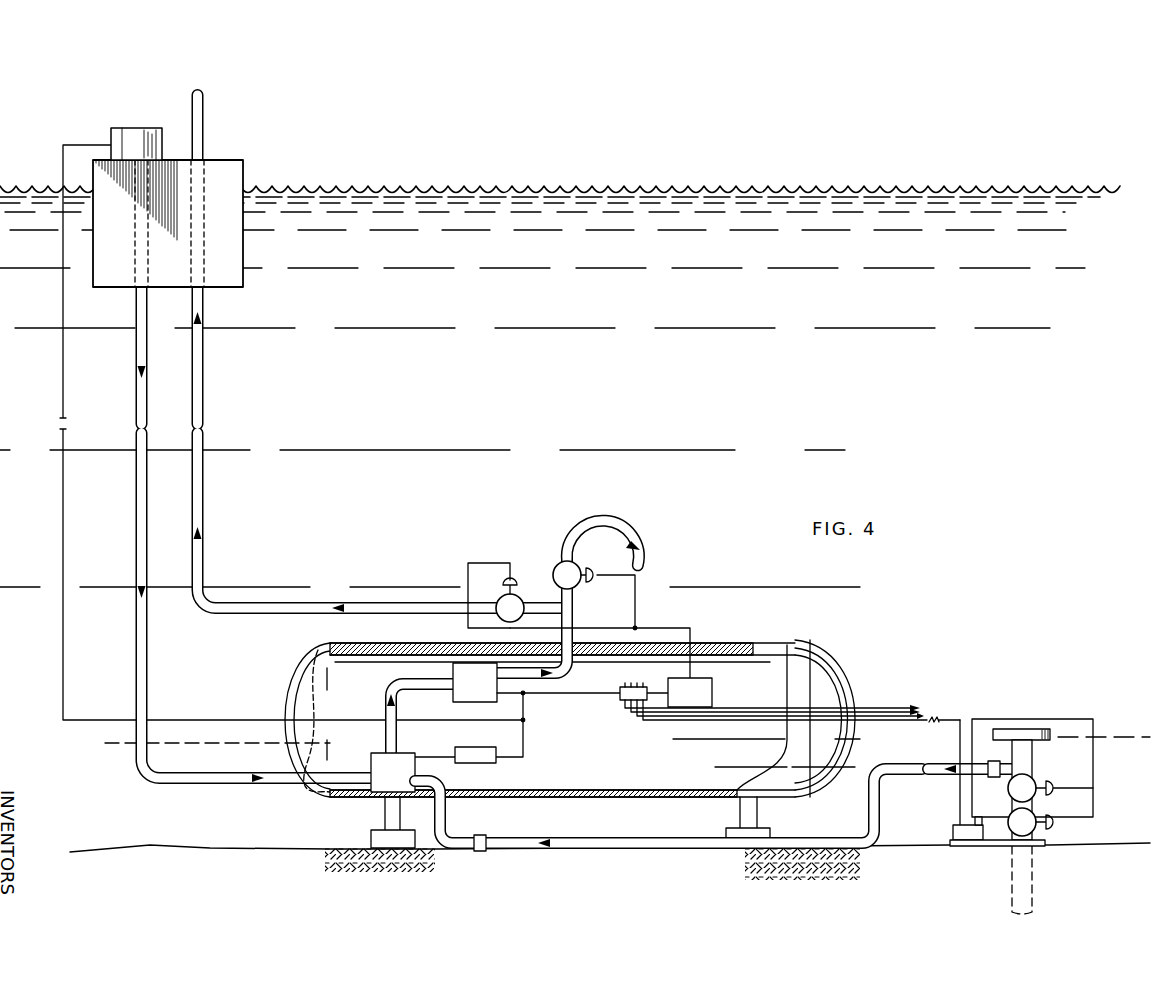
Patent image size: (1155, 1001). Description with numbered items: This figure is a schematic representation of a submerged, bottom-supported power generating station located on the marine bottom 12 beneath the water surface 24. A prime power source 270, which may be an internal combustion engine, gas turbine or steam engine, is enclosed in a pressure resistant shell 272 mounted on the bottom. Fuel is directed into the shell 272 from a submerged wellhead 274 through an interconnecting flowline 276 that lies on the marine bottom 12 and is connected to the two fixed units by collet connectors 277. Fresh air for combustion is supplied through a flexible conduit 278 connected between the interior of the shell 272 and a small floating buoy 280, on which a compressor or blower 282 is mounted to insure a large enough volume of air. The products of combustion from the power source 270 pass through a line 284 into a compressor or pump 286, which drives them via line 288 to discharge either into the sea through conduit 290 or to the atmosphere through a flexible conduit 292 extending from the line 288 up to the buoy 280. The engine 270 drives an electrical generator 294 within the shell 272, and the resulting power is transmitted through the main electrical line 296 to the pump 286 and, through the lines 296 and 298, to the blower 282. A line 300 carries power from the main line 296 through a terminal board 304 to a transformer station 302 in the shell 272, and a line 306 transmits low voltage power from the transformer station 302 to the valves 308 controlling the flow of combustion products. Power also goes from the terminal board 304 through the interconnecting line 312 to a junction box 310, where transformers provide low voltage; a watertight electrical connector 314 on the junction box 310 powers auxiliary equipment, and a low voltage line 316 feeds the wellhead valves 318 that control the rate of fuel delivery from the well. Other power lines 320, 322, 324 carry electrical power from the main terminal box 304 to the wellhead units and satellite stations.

The marine bottom 12 is at (212, 848).
The water surface 24 is at (627, 193).
The prime power source 270 is at (378, 753).
The pressure resistant shell 272 is at (832, 662).
The submerged wellhead 274 is at (1033, 758).
The interconnecting flowline 276 is at (615, 838).
The collet connectors 277 is at (483, 836).
The flexible conduit 278 is at (135, 497).
The floating buoy 280 is at (190, 272).
The compressor or blower 282 is at (124, 128).
The line 284 is at (385, 700).
The compressor or pump 286 is at (455, 702).
The line 288 is at (568, 668).
The conduit 290 is at (636, 524).
The flexible conduit 292 is at (205, 500).
The electrical generator 294 is at (490, 747).
The main electrical line 296 is at (523, 740).
The line 298 is at (62, 655).
The line 300 is at (600, 694).
The transformer station 302 is at (712, 688).
The terminal board 304 is at (640, 687).
The line 306 is at (665, 628).
The valves 308 is at (532, 548).
The junction box 310 is at (953, 832).
The interconnecting line 312 is at (950, 724).
The watertight electrical connector 314 is at (990, 813).
The low voltage line 316 is at (1060, 719).
The wellhead valves 318 is at (1055, 824).
The power line 320 is at (866, 706).
The power line 322 is at (880, 712).
The power line 324 is at (915, 720).